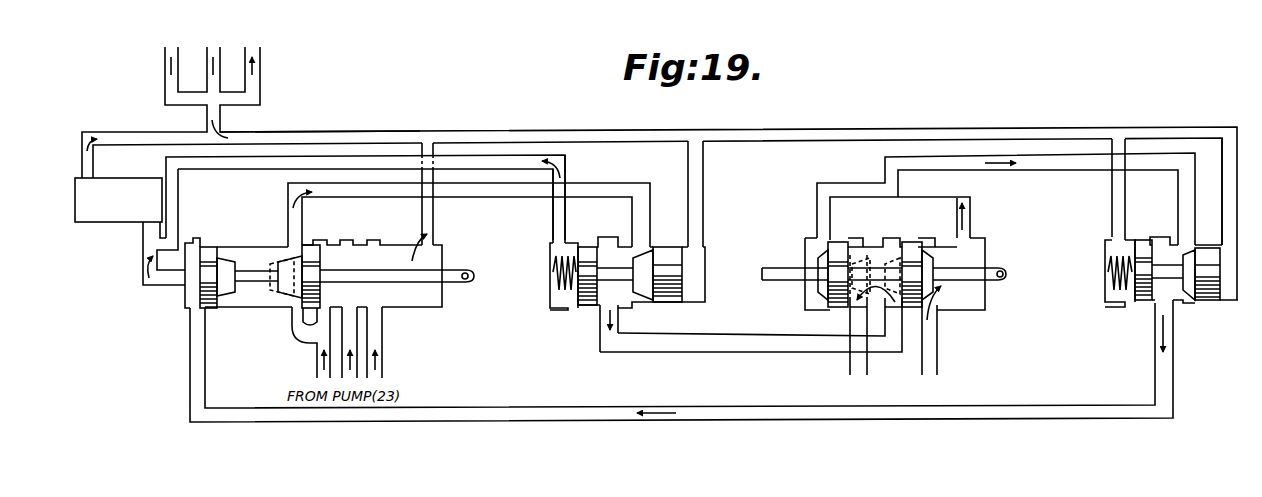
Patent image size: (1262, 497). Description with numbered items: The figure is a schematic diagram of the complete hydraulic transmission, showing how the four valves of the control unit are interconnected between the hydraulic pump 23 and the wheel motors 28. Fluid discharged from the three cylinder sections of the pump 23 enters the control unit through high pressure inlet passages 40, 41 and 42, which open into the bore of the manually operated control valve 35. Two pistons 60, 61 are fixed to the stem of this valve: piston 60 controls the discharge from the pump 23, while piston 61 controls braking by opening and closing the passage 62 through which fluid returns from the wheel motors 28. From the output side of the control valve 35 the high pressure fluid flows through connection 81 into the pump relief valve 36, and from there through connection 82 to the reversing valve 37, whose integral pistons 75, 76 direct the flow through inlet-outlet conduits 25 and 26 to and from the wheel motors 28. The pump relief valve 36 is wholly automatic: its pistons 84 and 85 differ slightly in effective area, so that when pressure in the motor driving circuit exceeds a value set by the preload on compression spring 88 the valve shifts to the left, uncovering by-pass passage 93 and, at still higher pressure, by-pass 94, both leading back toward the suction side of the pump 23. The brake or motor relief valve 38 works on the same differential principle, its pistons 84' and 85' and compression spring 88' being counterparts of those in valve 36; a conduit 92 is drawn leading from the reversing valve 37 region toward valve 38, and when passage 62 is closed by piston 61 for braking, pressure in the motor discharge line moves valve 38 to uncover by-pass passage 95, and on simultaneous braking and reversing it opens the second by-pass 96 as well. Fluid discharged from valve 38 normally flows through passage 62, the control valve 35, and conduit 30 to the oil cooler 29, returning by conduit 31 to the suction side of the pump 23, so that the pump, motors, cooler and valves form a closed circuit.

The hydraulic pump 23 is at (199, 38).
The inlet-outlet conduit 25 is at (930, 357).
The inlet-outlet conduit 26 is at (850, 366).
The wheel motors 28 is at (902, 395).
The oil cooler 29 is at (92, 212).
The inlet conduit 30 is at (148, 230).
The outlet conduit 31 is at (131, 134).
The control valve 35 is at (255, 312).
The pump relief valve 36 is at (674, 304).
The reversing valve 37 is at (947, 311).
The brake relief valve 38 is at (1129, 310).
The high pressure inlet passage 40 is at (317, 357).
The high pressure inlet passage 41 is at (349, 326).
The high pressure inlet passage 42 is at (376, 357).
The piston 60 is at (322, 258).
The piston 61 is at (208, 256).
The passage 62 is at (732, 413).
The piston 75 is at (838, 248).
The piston 76 is at (910, 250).
The connection 81 is at (523, 192).
The connection 82 is at (735, 344).
The piston 84 is at (641, 261).
The piston 84' is at (1194, 290).
The piston 85 is at (580, 297).
The piston 85' is at (1150, 251).
The compression spring 88 is at (545, 276).
The compression spring 88' is at (1098, 275).
The conduit 92 is at (1052, 164).
The by-pass passage 93 is at (434, 215).
The by-pass 94 is at (253, 171).
The by-pass passage 95 is at (1226, 199).
The by-pass 96 is at (1111, 208).